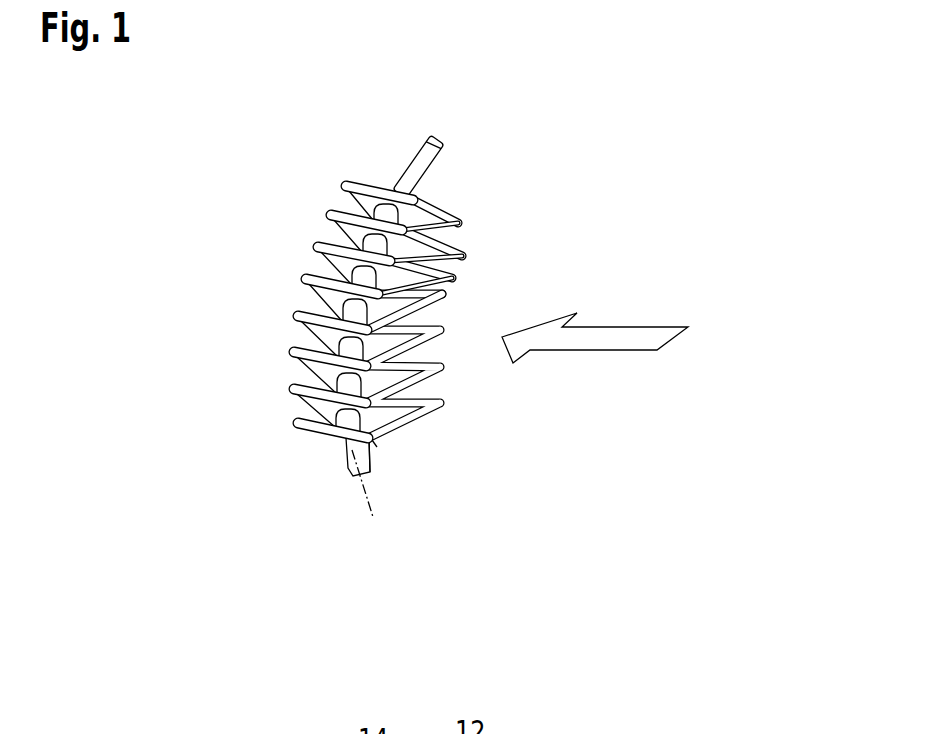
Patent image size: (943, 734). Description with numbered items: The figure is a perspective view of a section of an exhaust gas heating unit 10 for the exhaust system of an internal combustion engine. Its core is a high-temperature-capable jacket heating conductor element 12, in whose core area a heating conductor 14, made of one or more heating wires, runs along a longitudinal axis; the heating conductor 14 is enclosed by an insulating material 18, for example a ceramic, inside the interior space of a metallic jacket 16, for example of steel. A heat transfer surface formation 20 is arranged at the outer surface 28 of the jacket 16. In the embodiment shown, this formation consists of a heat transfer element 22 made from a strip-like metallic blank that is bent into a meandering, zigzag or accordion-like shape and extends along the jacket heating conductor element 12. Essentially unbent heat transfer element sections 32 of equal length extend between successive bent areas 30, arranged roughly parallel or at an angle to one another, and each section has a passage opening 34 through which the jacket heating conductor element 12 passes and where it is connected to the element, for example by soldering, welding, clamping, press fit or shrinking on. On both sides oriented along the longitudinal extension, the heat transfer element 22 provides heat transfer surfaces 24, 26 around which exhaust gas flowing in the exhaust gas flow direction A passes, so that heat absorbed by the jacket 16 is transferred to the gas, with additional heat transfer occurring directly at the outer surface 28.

The exhaust gas heating unit 10 is at (703, 143).
The jacket heating conductor element 12 is at (408, 160).
The heating conductor 14 is at (355, 498).
The jacket 16 is at (350, 450).
The insulating material 18 is at (440, 133).
The heat transfer surface formation 20 is at (186, 291).
The heat transfer element 22 is at (348, 192).
The heat transfer surface 24 is at (397, 315).
The heat transfer surface 26 is at (458, 252).
The outer surface 28 is at (373, 452).
The bent area 30 is at (297, 423).
The heat transfer element section 32 is at (317, 413).
The passage opening 34 is at (340, 298).
The exhaust gas flow direction A is at (623, 337).